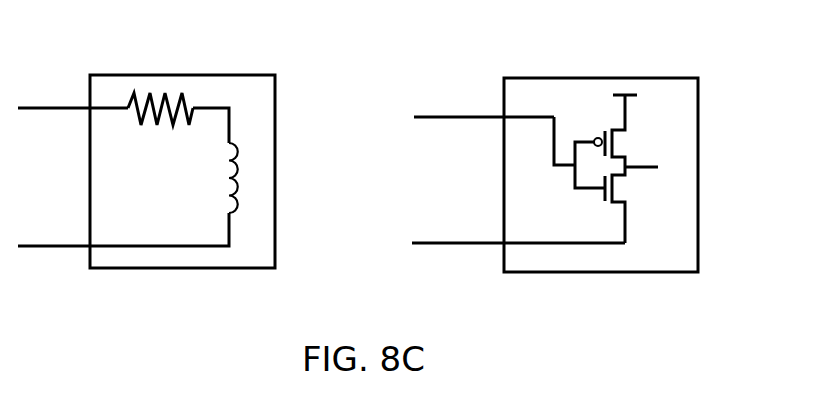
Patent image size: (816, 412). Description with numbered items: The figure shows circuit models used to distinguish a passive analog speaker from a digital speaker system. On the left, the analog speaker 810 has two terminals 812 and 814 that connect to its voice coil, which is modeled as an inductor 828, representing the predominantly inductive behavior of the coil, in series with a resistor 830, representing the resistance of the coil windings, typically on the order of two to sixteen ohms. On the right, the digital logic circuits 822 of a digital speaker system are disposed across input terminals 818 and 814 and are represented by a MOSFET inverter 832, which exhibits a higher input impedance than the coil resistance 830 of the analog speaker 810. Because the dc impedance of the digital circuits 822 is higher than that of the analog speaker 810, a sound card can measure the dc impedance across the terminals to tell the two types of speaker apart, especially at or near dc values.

The analog speaker 810 is at (231, 75).
The terminal 812 is at (58, 107).
The terminal 814 is at (55, 247).
The input terminal 818 is at (450, 117).
The digital logic circuits 822 is at (650, 78).
The inductor 828 is at (248, 165).
The series resistor 830 is at (150, 94).
The MOSFET inverter 832 is at (643, 145).